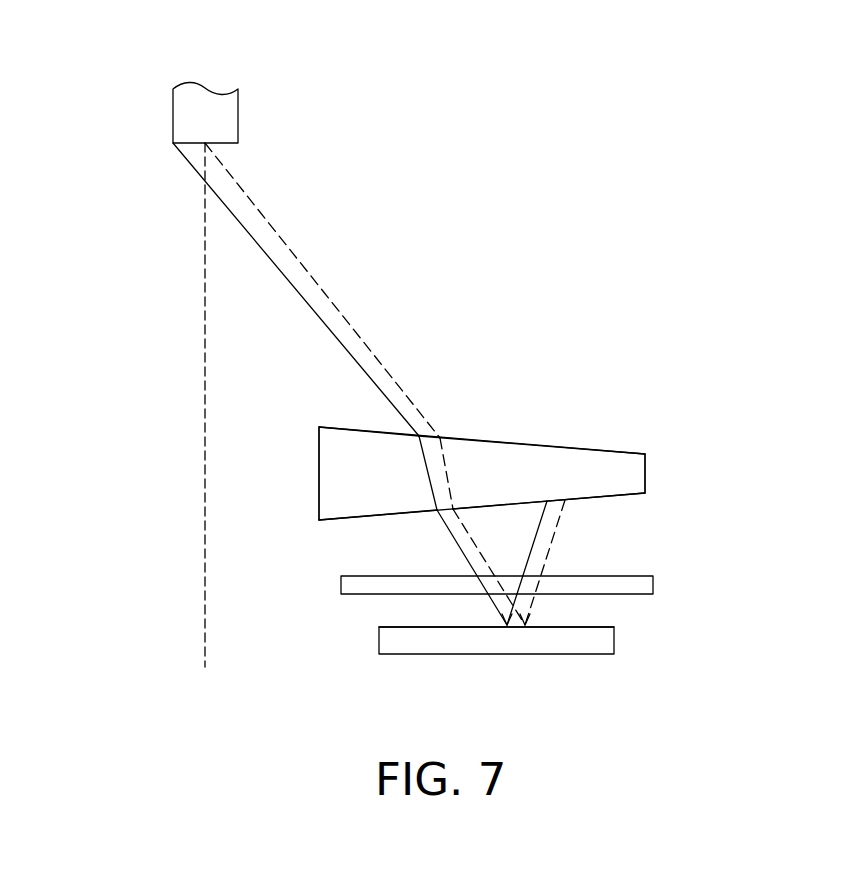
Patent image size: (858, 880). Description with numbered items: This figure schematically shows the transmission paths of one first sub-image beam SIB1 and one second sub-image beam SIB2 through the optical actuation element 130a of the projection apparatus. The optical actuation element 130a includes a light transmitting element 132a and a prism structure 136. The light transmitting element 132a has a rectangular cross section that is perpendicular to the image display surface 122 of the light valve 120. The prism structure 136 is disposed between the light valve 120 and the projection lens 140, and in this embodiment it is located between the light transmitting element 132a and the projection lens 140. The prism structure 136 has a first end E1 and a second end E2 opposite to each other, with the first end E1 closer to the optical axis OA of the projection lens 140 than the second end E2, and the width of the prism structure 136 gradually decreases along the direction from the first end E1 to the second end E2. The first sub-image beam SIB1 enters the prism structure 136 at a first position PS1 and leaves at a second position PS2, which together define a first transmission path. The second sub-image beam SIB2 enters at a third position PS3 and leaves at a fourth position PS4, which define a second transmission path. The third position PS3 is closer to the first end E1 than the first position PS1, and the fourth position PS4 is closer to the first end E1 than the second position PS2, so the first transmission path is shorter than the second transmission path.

The projection lens 140 is at (173, 117).
The optical axis OA is at (205, 296).
The prism structure 136 is at (327, 475).
The first end E1 is at (337, 433).
The second end E2 is at (612, 457).
The first position PS1 is at (453, 509).
The second position PS2 is at (440, 437).
The third position PS3 is at (437, 513).
The fourth position PS4 is at (419, 436).
The first sub-image beam SIB1 is at (488, 571).
The second sub-image beam SIB2 is at (460, 549).
The light transmitting element 132a is at (643, 580).
The optical actuation element 130a is at (783, 76).
The light valve 120 is at (387, 642).
The image display surface 122 is at (598, 625).